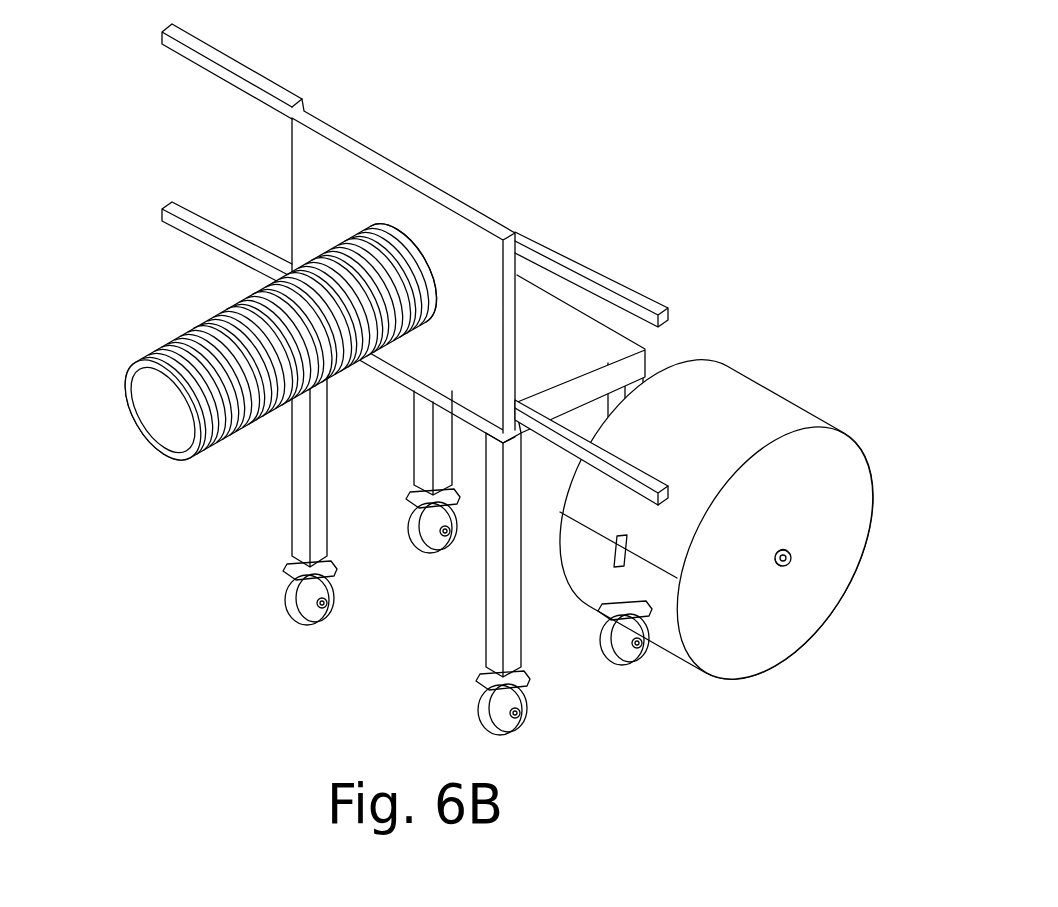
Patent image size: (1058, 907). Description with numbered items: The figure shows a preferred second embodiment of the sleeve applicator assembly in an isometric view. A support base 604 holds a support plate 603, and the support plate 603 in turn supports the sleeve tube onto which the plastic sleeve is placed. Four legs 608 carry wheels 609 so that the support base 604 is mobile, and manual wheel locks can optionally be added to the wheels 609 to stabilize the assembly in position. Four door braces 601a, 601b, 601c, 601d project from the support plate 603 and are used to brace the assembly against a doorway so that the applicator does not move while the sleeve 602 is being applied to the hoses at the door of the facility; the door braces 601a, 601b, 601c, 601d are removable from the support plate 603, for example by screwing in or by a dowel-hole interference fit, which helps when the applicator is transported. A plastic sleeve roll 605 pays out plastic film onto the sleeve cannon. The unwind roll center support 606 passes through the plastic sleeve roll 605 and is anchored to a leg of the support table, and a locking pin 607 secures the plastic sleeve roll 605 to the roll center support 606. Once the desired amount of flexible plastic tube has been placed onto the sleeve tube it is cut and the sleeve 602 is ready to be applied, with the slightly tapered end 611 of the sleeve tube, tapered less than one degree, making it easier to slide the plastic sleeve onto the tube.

The door brace 601a is at (595, 250).
The door brace 601b is at (257, 63).
The door brace 601c is at (203, 205).
The door brace 601d is at (551, 459).
The sleeve 602 is at (188, 318).
The support plate 603 is at (375, 128).
The support base 604 is at (654, 345).
The plastic sleeve roll 605 is at (767, 381).
The unwind roll center support 606 is at (789, 582).
The locking pin 607 is at (787, 528).
The legs 608 is at (531, 656).
The wheels 609 is at (534, 730).
The tapered end 611 is at (152, 452).